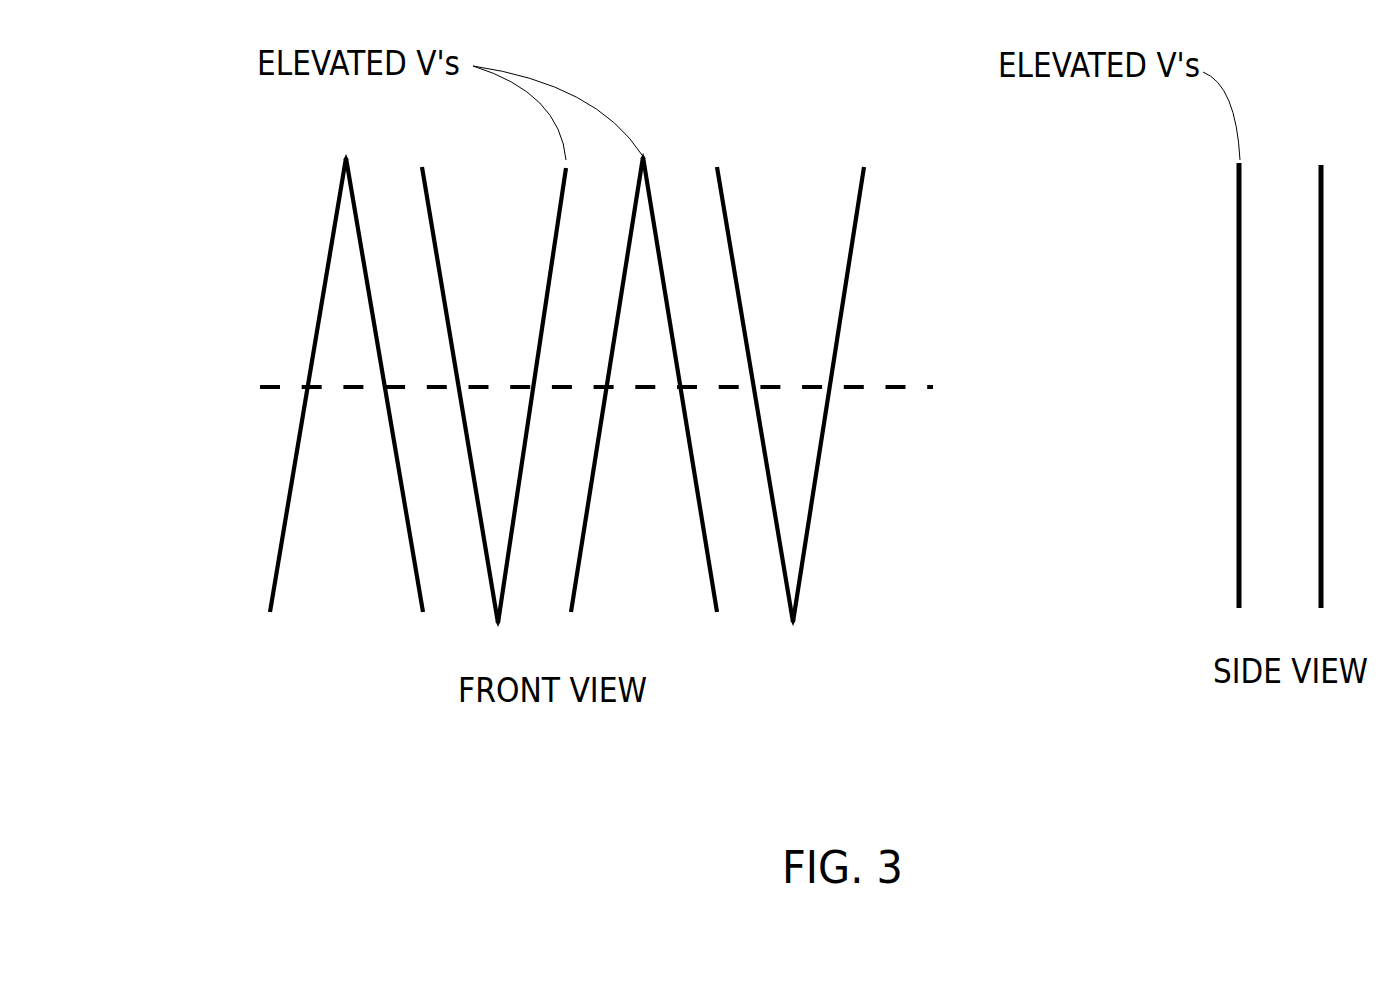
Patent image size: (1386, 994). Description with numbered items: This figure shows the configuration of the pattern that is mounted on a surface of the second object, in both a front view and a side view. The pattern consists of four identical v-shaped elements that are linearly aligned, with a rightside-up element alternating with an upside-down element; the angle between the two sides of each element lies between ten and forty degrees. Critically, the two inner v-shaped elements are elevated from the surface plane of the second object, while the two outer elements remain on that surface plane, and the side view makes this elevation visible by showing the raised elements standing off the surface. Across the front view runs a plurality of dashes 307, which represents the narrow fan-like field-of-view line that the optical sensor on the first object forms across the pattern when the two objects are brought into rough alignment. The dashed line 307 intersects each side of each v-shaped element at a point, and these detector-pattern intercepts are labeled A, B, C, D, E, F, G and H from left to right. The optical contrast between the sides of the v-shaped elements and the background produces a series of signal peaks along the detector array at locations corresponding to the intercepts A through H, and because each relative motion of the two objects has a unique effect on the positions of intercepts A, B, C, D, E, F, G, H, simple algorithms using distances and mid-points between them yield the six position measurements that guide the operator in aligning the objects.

The plurality of dashes 307 is at (863, 387).
The detector-pattern intercept A is at (308, 385).
The detector-pattern intercept B is at (384, 385).
The detector-pattern intercept C is at (460, 395).
The detector-pattern intercept D is at (532, 395).
The detector-pattern intercept E is at (607, 384).
The detector-pattern intercept F is at (680, 384).
The detector-pattern intercept G is at (755, 394).
The detector-pattern intercept H is at (828, 394).